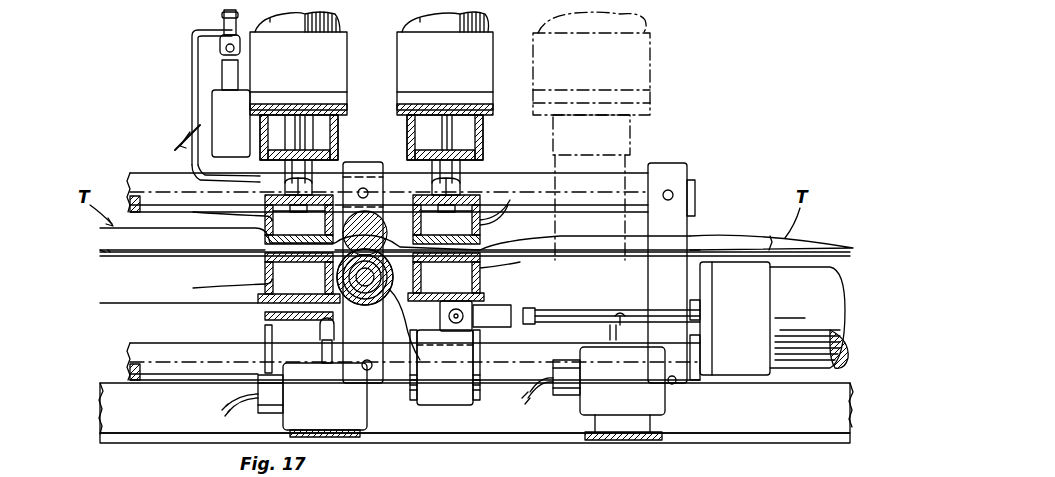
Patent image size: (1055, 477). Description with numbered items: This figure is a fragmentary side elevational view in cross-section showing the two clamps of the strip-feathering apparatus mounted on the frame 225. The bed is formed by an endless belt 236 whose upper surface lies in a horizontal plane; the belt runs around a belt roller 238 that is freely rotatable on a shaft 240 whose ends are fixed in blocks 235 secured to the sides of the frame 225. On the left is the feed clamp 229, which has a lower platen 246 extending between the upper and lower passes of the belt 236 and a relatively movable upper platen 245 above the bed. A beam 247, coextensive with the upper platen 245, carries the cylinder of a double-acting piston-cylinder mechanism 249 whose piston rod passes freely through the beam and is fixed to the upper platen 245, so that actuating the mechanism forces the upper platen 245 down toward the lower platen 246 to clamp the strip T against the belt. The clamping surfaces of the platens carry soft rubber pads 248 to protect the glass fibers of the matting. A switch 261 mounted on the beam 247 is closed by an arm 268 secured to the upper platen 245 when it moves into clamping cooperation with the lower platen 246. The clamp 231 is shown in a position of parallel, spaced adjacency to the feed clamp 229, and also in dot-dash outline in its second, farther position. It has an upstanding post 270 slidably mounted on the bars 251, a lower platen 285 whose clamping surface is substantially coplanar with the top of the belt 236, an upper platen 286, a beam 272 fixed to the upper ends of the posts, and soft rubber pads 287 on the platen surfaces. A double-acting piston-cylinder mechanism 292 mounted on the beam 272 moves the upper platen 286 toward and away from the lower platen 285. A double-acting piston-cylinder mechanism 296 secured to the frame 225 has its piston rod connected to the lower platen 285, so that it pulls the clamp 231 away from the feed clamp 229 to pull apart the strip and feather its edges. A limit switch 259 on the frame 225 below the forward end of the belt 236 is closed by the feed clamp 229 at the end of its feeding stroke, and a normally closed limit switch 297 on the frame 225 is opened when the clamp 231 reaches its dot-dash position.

The frame 225 is at (175, 432).
The feed clamp 229 is at (355, 88).
The clamp 231 is at (498, 90).
The blocks 235 is at (395, 150).
The endless belt 236 is at (123, 258).
The belt roller 238 is at (445, 330).
The shaft 240 is at (365, 287).
The upper platen 245 is at (272, 212).
The lower platen 246 is at (262, 310).
The beam 247 is at (335, 152).
The soft rubber pads 248 is at (265, 220).
The double-acting piston-cylinder mechanism 249 is at (340, 28).
The bars 251 is at (160, 168).
The limit switch 259 is at (320, 355).
The switch 261 is at (215, 102).
The arm 268 is at (192, 46).
The upstanding post 270 is at (455, 398).
The beam 272 is at (478, 152).
The lower platen 285 is at (482, 293).
The upper platen 286 is at (482, 200).
The soft rubber pads 287 is at (490, 212).
The double-acting piston-cylinder mechanism 292 is at (488, 28).
The double-acting piston-cylinder mechanism 296 is at (808, 357).
The normally closed limit switch 297 is at (585, 398).